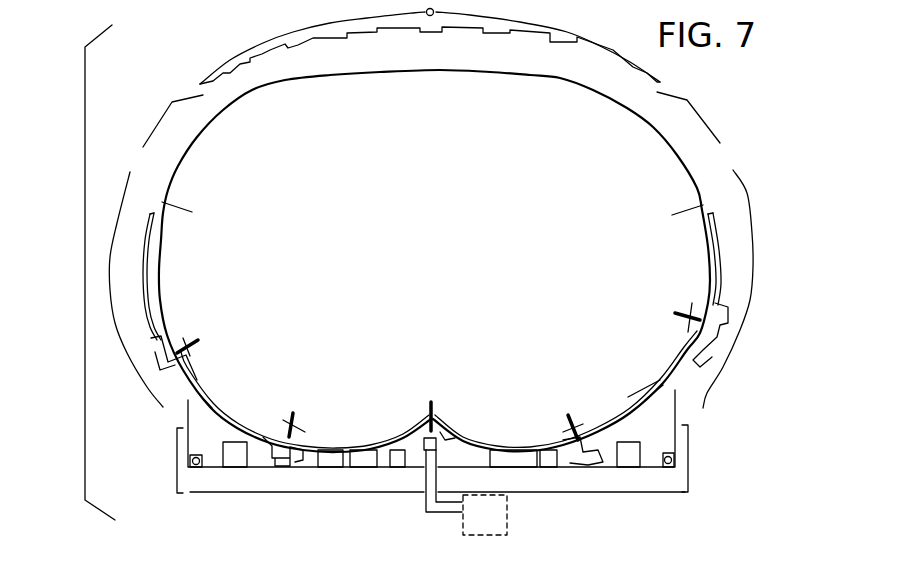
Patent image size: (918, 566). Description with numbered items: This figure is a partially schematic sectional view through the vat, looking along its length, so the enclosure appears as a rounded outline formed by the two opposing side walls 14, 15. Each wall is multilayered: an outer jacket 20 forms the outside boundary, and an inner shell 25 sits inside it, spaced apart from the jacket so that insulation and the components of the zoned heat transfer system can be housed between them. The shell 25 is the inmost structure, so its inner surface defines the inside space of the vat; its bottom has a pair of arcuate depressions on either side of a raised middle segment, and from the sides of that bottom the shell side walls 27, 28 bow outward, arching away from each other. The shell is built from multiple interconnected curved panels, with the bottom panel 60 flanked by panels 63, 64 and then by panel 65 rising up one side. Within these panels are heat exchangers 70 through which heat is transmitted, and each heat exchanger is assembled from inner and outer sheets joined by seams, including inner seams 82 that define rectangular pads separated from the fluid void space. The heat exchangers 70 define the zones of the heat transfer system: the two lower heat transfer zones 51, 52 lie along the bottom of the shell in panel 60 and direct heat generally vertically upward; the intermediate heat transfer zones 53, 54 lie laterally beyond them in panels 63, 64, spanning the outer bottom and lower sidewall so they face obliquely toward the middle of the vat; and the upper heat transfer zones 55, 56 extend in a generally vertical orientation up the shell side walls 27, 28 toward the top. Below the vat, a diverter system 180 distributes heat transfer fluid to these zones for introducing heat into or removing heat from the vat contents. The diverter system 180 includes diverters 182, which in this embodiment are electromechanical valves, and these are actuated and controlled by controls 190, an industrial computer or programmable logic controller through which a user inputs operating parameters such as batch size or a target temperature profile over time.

The side wall 14 is at (126, 179).
The side wall 15 is at (745, 190).
The outer jacket 20 is at (727, 121).
The inner shell 25 is at (664, 128).
The shell side wall 27 is at (168, 192).
The shell side wall 28 is at (702, 199).
The lower heat transfer zone 51 is at (420, 421).
The lower heat transfer zone 52 is at (561, 433).
The intermediate heat transfer zone 53 is at (285, 419).
The intermediate heat transfer zone 54 is at (688, 332).
The upper heat transfer zone 55 is at (187, 327).
The upper heat transfer zone 56 is at (695, 240).
The panel 60 is at (351, 469).
The panel 63 is at (207, 416).
The panel 64 is at (670, 400).
The panel 65 is at (142, 247).
The heat exchanger 70 is at (153, 320).
The inner seam 82 is at (447, 437).
The diverter system 180 is at (416, 460).
The diverter 182 is at (160, 372).
The controls 190 is at (502, 529).